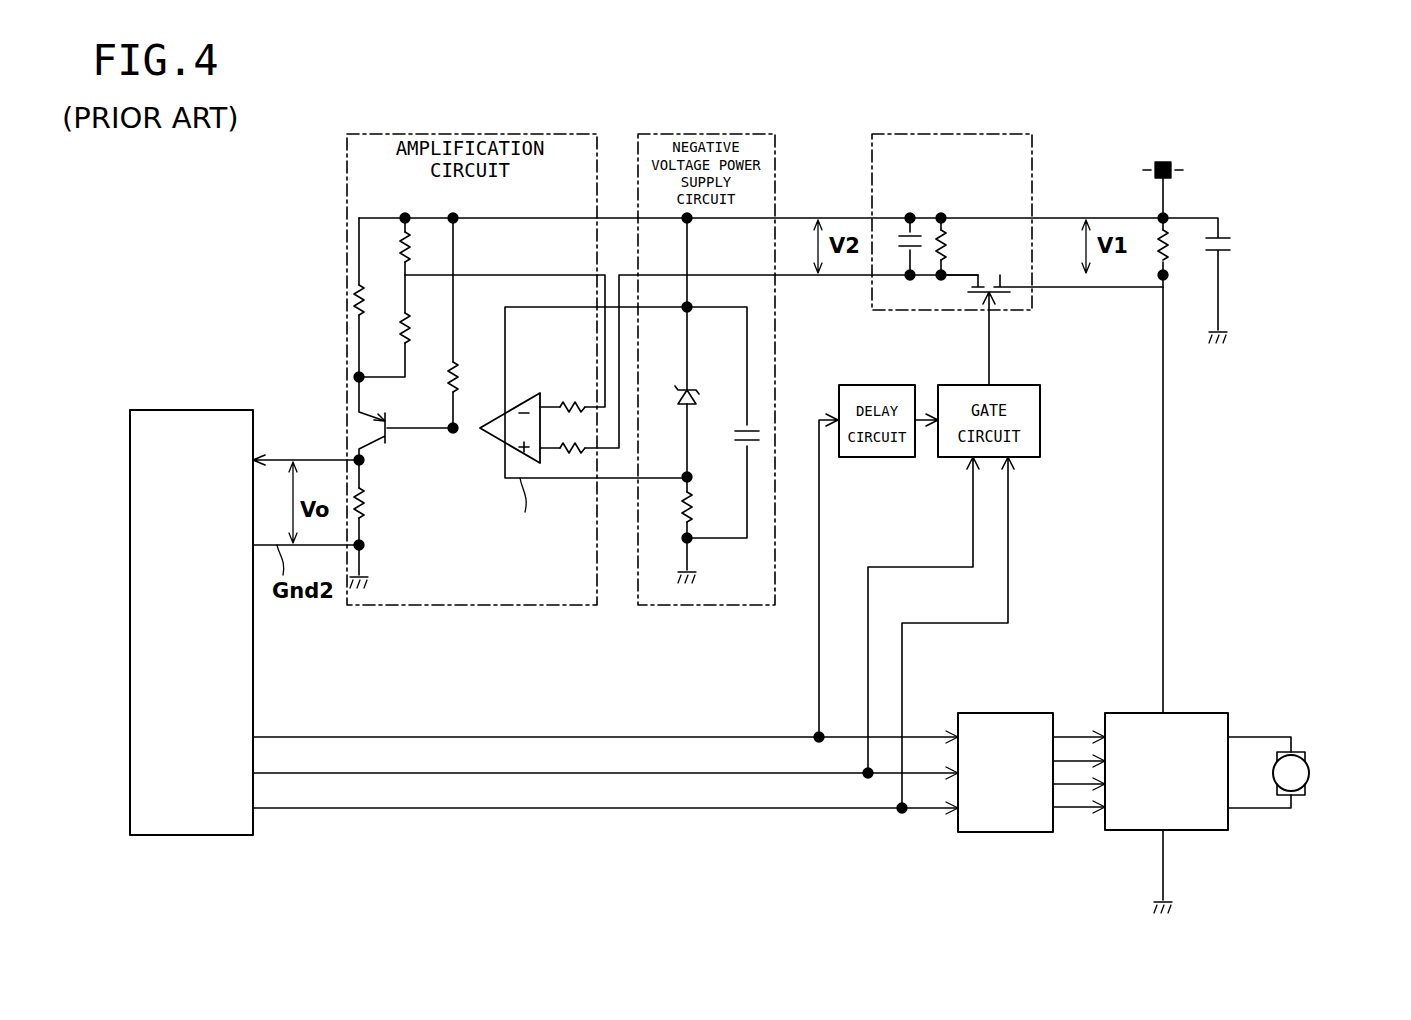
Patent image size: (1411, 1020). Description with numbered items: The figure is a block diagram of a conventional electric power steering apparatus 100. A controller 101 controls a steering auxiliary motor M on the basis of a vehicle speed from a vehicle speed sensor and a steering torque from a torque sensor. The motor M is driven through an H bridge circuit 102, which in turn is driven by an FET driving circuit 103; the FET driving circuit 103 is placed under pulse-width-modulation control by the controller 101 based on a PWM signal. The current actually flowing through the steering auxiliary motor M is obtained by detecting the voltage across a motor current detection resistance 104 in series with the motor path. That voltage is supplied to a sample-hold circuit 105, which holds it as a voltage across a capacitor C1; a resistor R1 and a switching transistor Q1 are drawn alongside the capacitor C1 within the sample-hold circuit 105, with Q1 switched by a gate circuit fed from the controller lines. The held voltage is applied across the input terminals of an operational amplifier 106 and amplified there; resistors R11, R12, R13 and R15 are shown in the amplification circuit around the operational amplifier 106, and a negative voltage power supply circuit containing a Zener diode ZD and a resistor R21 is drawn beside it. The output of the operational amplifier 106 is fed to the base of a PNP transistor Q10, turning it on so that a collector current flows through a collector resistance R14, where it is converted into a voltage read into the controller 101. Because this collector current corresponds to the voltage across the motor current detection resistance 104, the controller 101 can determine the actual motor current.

The electric power steering apparatus 100 is at (1123, 113).
The controller 101 is at (200, 820).
The H bridge circuit 102 is at (1203, 713).
The FET driving circuit 103 is at (1013, 713).
The motor current detection resistance 104 is at (1173, 245).
The sample-hold circuit 105 is at (936, 184).
The operational amplifier 106 is at (497, 430).
The FET switch Q1 is at (1052, 330).
The PNP transistor Q10 is at (406, 422).
The capacitor C1 is at (908, 238).
The resistor R1 is at (960, 246).
The resistor R11 is at (430, 246).
The resistor R12 is at (409, 326).
The resistor R13 is at (381, 297).
The collector resistance R14 is at (384, 502).
The resistor R15 is at (479, 323).
The resistor R21 is at (668, 523).
The zener diode ZD is at (671, 347).
The steering auxiliary motor M is at (1310, 768).